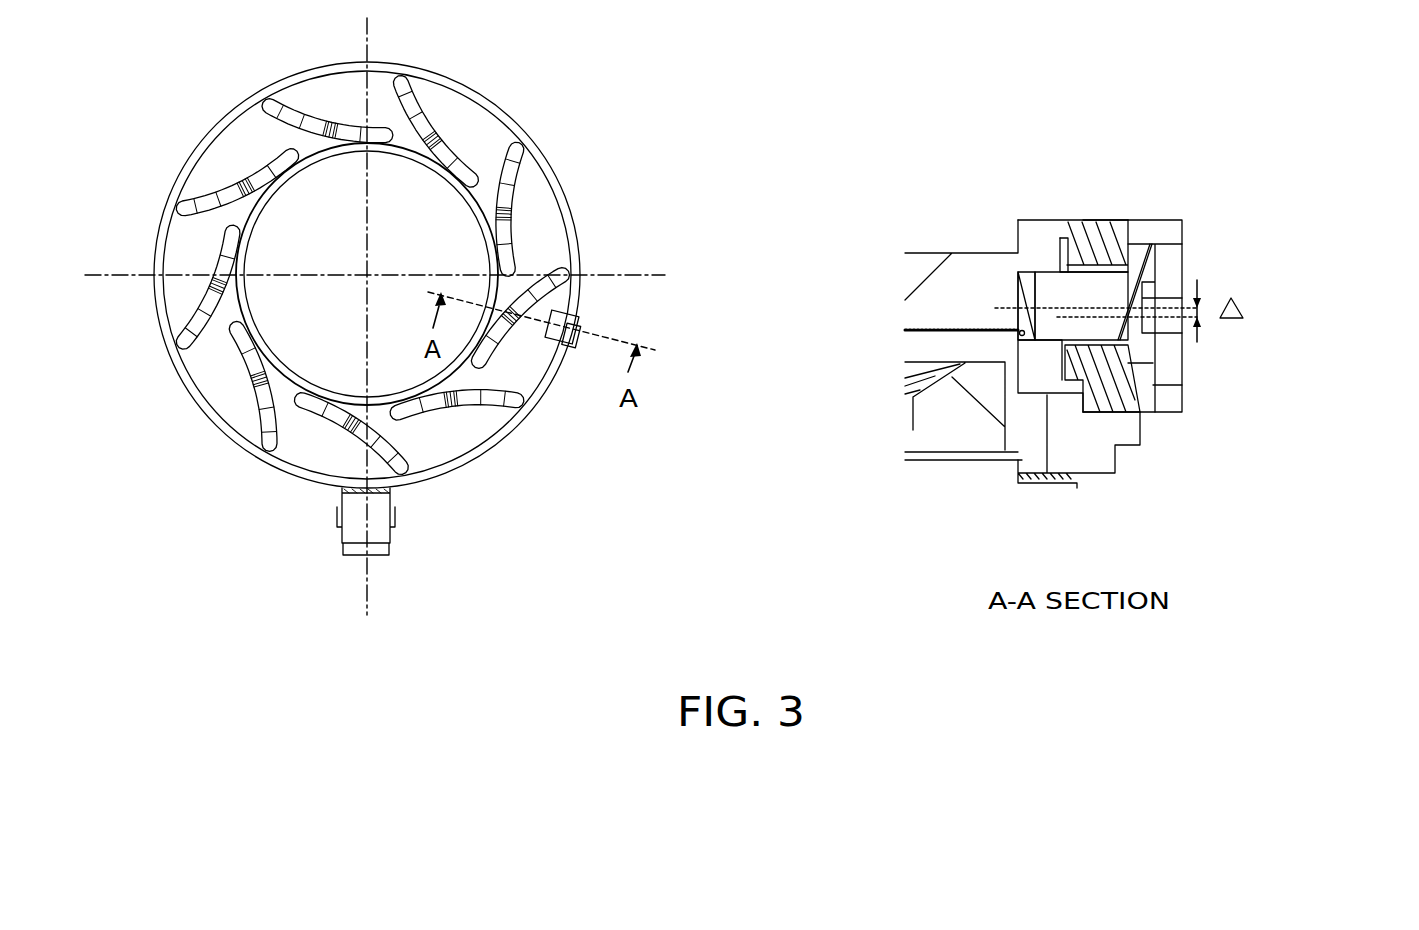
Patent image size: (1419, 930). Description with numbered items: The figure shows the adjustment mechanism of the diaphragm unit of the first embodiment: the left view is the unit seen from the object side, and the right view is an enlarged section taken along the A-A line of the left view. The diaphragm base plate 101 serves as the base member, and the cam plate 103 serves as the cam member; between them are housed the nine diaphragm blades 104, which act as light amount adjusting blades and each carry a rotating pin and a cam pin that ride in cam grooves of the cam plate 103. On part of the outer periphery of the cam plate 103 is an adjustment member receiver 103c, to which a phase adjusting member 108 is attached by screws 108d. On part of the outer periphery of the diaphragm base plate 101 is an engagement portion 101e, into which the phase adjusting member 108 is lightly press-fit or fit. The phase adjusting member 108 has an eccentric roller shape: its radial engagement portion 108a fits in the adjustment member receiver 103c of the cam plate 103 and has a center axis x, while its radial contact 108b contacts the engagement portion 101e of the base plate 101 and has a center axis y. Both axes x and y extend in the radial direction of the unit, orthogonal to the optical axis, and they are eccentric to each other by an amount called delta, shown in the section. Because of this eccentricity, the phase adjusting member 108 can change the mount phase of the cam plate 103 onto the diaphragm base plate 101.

The diaphragm base plate 101 is at (1092, 460).
The engagement portion 101e is at (1110, 413).
The cam plate 103 is at (475, 123).
The adjustment member receiver 103c is at (1090, 217).
The diaphragm blades 104 is at (397, 462).
The phase adjusting member 108 is at (578, 308).
The radial engagement portion 108a is at (1075, 235).
The radial contact 108b is at (1127, 220).
The screws 108d is at (1138, 345).
The center axis of the radial engagement portion x is at (1225, 255).
The center axis of the radial contact y is at (1230, 255).